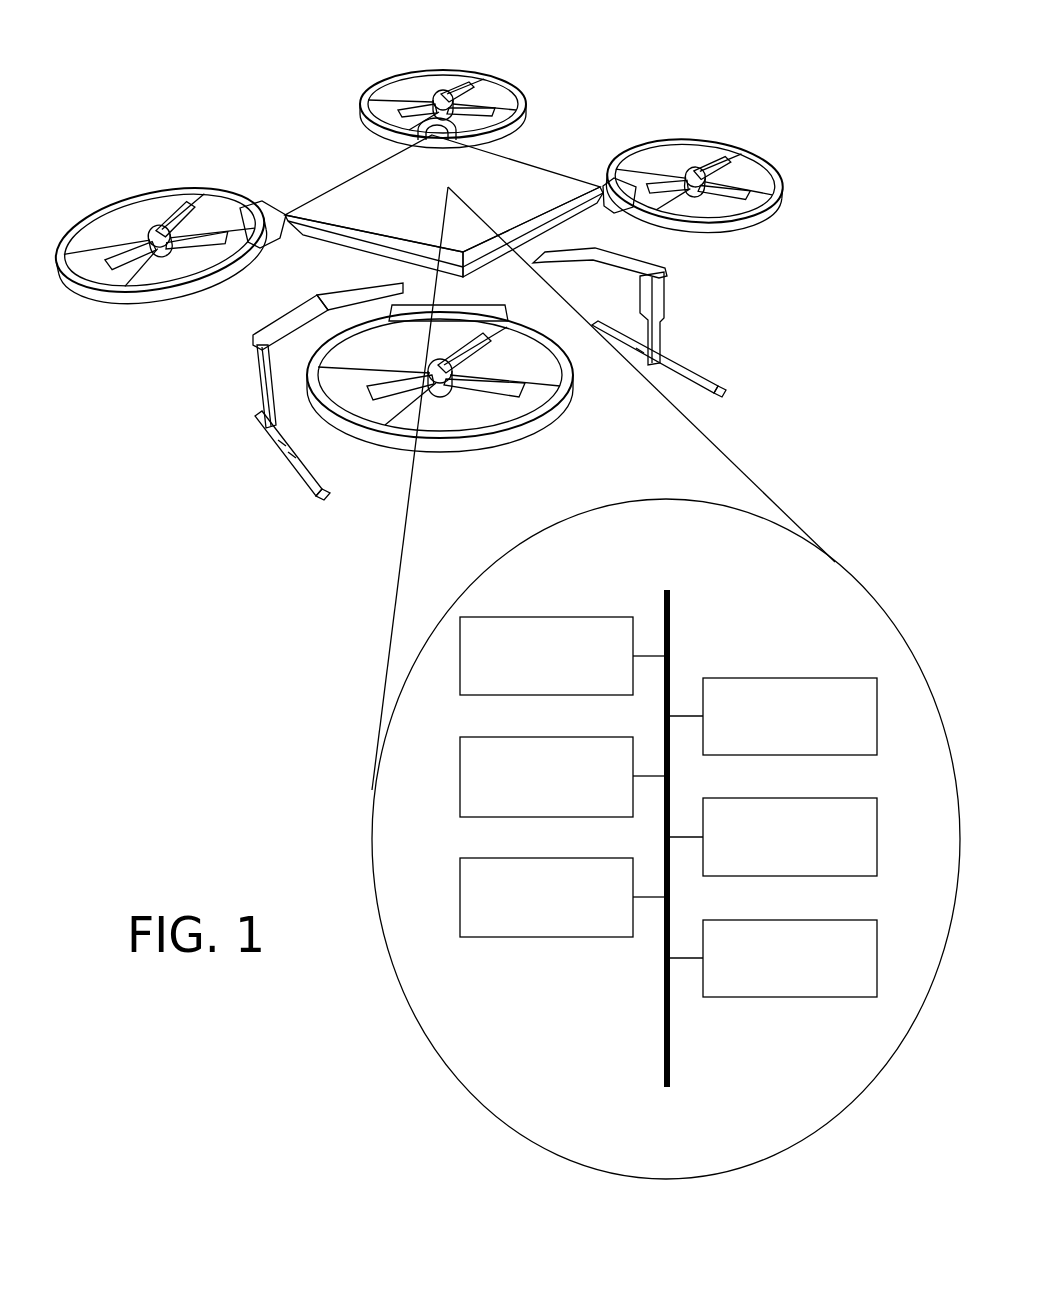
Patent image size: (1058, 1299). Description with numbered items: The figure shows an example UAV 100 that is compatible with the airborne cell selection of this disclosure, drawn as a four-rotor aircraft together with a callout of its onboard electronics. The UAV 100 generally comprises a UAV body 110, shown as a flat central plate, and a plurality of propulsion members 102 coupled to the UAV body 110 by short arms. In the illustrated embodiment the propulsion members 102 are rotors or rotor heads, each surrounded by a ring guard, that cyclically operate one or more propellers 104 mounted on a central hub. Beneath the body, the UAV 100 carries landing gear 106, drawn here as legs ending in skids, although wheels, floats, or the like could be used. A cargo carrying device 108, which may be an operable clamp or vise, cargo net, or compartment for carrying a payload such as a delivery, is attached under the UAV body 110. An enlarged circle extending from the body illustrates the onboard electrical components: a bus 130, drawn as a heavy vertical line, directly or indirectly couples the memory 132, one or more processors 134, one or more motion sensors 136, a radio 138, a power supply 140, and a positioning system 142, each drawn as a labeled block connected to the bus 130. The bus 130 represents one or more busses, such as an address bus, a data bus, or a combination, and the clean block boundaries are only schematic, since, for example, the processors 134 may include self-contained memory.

The UAV 100 is at (90, 80).
The propulsion members 102 is at (690, 138).
The propellers 104 is at (720, 160).
The landing gear 106 is at (257, 386).
The cargo carrying device 108 is at (348, 258).
The UAV body 110 is at (552, 145).
The bus 130 is at (665, 1012).
The memory 132 is at (520, 697).
The processors 134 is at (520, 817).
The motion sensors 136 is at (520, 937).
The radio 138 is at (812, 757).
The power supply 140 is at (812, 877).
The positioning system 142 is at (812, 997).